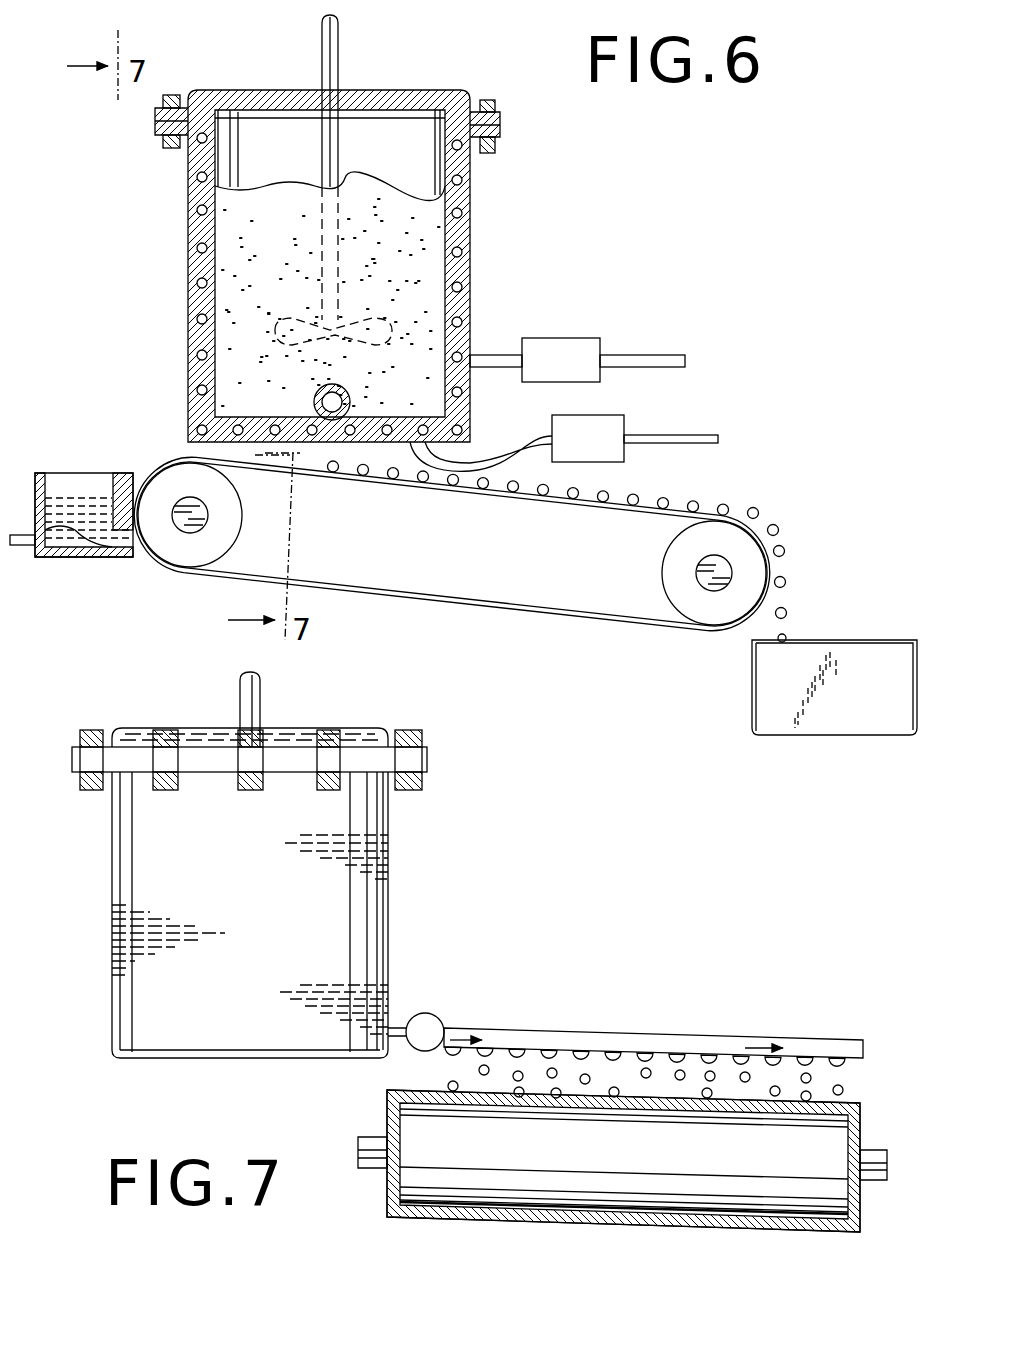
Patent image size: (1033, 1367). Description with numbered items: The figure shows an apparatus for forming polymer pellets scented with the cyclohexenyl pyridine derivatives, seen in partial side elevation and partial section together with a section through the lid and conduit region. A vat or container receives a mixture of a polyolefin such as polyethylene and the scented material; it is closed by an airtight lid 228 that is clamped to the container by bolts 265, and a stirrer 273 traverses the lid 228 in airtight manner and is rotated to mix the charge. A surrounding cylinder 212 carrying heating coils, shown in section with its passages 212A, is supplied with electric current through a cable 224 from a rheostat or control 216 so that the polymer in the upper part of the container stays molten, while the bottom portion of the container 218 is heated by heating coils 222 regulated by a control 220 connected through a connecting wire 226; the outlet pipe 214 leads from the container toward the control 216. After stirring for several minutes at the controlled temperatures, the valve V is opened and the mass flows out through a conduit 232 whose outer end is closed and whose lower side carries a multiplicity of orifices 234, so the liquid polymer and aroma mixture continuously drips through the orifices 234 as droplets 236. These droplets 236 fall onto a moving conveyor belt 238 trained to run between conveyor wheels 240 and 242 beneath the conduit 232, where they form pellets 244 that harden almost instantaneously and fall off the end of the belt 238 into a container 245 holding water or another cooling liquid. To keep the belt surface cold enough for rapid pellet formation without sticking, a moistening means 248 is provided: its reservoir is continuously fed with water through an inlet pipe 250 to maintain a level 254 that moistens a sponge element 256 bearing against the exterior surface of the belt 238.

In FIG. 6, the surrounding cylinder 212 is at (183, 312).
In FIG. 7, the surrounding cylinder 212 is at (108, 955).
In FIG. 6, the tank jacket passages 212A is at (462, 248).
In FIG. 6, the outlet pipe 214 is at (493, 353).
In FIG. 6, the rheostat or control 216 is at (560, 352).
In FIG. 6, the bottom portion of the container 218 is at (347, 396).
In FIG. 6, the control 220 is at (608, 425).
In FIG. 6, the heating coils 222 is at (490, 456).
In FIG. 6, the cable 224 is at (640, 353).
In FIG. 6, the connecting wire 226 is at (670, 436).
In FIG. 6, the lid 228 is at (393, 96).
In FIG. 7, the lid 228 is at (190, 732).
In FIG. 7, the conduit 232 is at (662, 1045).
In FIG. 7, the orifices 234 is at (453, 1050).
In FIG. 7, the droplets 236 is at (555, 1072).
In FIG. 6, the conveyor belt 238 is at (200, 574).
In FIG. 7, the conveyor belt 238 is at (390, 1092).
In FIG. 6, the conveyor wheel 240 is at (230, 524).
In FIG. 6, the conveyor wheel 242 is at (668, 568).
In FIG. 7, the conveyor wheel 242 is at (660, 1158).
In FIG. 6, the pellets 244 is at (780, 548).
In FIG. 6, the collection container 245 is at (780, 712).
In FIG. 6, the moistening means 248 is at (38, 478).
In FIG. 6, the inlet pipe 250 is at (45, 556).
In FIG. 6, the level 254 is at (98, 556).
In FIG. 6, the sponge element 256 is at (120, 480).
In FIG. 6, the bolts 265 is at (168, 140).
In FIG. 7, the bolts 265 is at (92, 732).
In FIG. 6, the stirrer 273 is at (322, 28).
In FIG. 7, the stirrer 273 is at (260, 705).